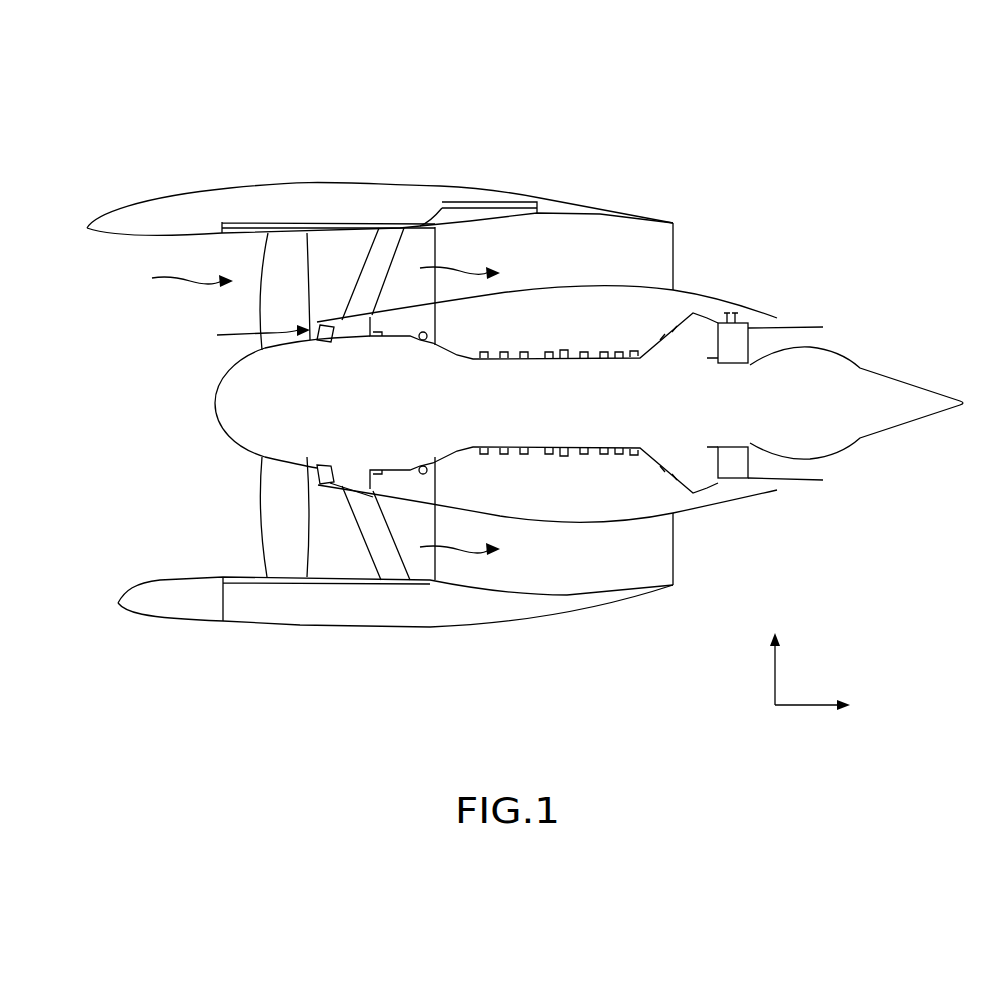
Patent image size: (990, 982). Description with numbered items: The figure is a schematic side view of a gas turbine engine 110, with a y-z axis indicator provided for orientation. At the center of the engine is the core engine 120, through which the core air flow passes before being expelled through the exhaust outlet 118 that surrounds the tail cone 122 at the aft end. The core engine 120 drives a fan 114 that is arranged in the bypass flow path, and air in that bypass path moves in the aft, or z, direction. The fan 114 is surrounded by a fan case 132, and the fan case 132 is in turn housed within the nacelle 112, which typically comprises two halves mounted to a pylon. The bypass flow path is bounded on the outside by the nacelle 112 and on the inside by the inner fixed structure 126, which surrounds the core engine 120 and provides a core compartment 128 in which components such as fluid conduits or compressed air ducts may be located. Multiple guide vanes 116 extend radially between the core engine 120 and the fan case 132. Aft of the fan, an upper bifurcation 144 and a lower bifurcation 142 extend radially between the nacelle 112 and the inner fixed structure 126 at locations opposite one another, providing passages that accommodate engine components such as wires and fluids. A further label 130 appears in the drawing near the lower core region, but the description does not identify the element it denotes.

The gas turbine engine 110 is at (688, 140).
The nacelle 112 is at (255, 172).
The fan 114 is at (267, 508).
The guide vanes 116 is at (375, 277).
The exhaust outlet 118 is at (818, 338).
The core engine 120 is at (565, 345).
The tail cone 122 is at (857, 432).
The inner fixed structure 126 is at (575, 278).
The core compartment 128 is at (580, 508).
The core engine casing 130 is at (641, 494).
The fan case 132 is at (250, 585).
The lower bifurcation 142 is at (652, 572).
The upper bifurcation 144 is at (676, 244).